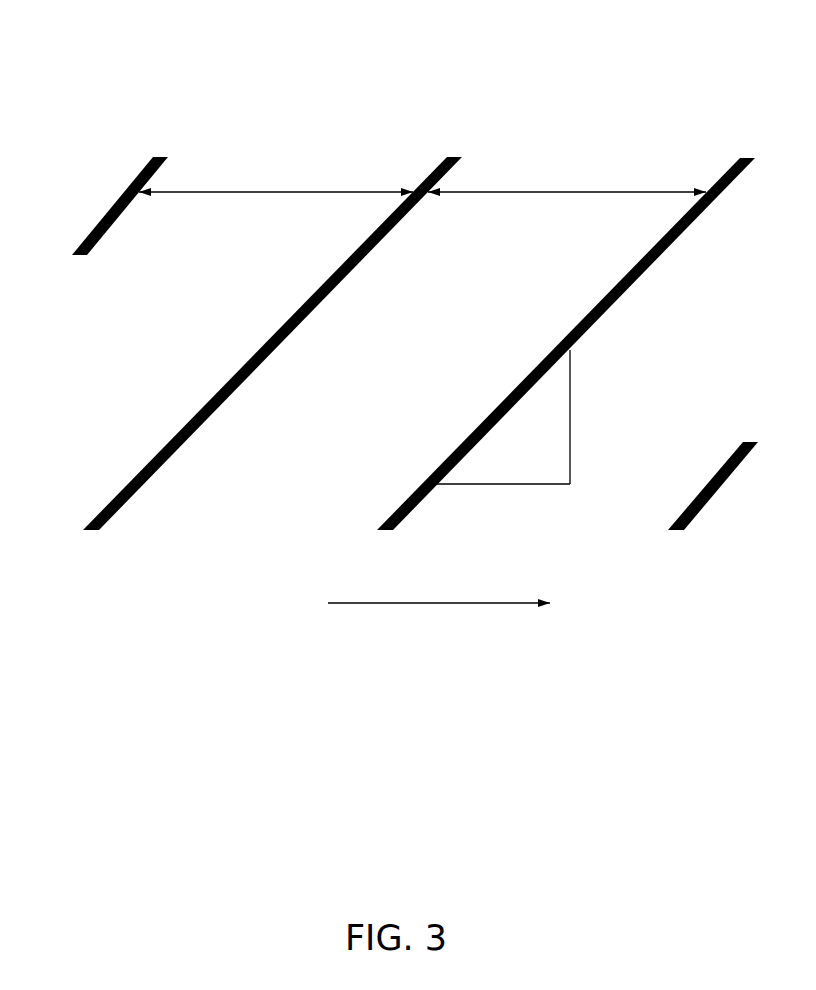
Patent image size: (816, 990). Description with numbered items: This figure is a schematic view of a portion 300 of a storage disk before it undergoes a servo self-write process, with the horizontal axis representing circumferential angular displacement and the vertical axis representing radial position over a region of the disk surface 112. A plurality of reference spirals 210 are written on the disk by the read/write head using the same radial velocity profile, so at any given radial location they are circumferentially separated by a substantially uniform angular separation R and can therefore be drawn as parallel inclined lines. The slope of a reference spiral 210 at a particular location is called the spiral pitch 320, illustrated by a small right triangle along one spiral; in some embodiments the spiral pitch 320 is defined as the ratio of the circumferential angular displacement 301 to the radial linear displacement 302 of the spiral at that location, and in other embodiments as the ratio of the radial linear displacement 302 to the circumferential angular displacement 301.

The portion of storage disk 300 is at (143, 65).
The reference spirals 210 is at (748, 158).
The surface 112 is at (143, 324).
The spiral pitch 320 is at (508, 460).
The circumferential angular displacement 301 is at (505, 485).
The radial linear displacement 302 is at (572, 408).
The angular separation R is at (270, 192).